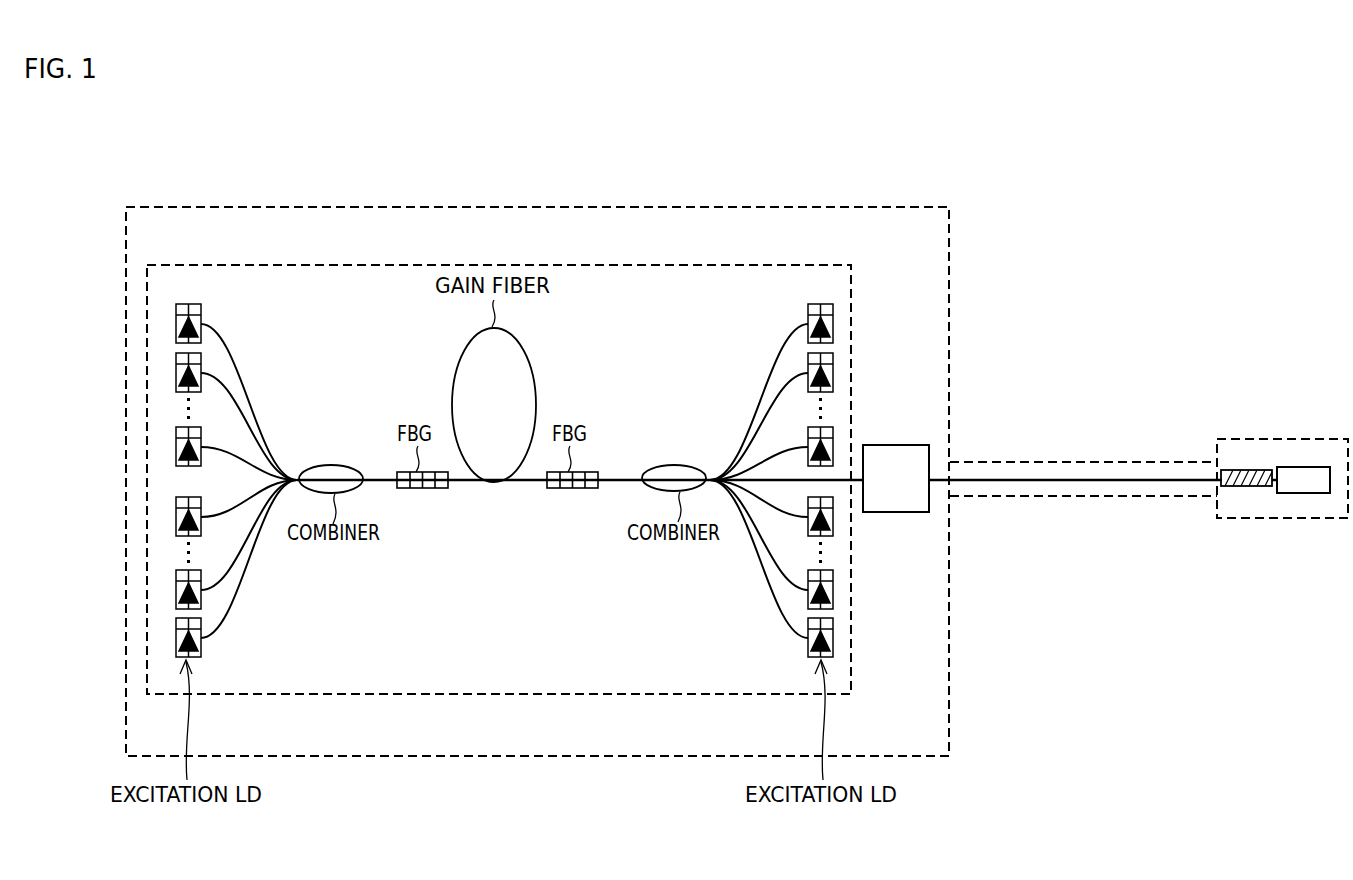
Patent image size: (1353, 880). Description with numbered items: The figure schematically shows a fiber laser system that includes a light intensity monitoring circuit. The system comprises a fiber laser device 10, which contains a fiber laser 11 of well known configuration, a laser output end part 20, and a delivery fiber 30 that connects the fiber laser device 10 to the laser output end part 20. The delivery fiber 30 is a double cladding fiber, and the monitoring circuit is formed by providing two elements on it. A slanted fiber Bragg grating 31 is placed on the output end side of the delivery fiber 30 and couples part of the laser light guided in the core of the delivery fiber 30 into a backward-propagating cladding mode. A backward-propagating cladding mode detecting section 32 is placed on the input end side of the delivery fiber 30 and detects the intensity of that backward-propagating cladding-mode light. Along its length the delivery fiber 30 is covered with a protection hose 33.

The fiber laser device 10 is at (878, 207).
The fiber laser 11 is at (777, 265).
The laser output end part 20 is at (1323, 439).
The delivery fiber 30 is at (1089, 462).
The slanted fiber Bragg grating 31 is at (1245, 470).
The backward-propagating cladding mode detecting section 32 is at (894, 445).
The protection hose 33 is at (1156, 462).